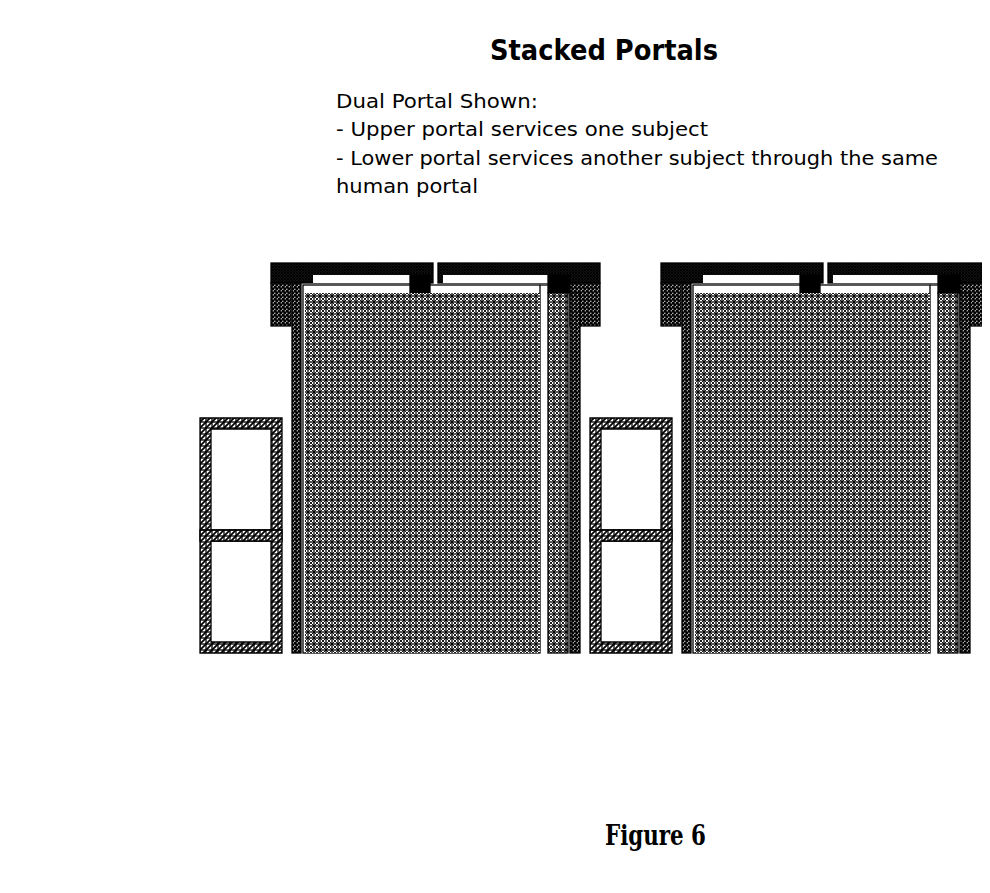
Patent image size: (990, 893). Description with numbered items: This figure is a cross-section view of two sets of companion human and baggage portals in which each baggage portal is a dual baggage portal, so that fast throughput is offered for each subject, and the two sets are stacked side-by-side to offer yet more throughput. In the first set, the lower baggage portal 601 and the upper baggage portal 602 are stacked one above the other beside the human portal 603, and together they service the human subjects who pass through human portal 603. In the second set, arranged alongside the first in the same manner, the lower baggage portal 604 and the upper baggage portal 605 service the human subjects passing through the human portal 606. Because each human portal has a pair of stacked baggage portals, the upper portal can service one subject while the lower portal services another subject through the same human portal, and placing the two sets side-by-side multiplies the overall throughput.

The baggage portal 601 is at (223, 615).
The baggage portal 602 is at (222, 502).
The human portal 603 is at (255, 252).
The baggage portal 604 is at (586, 649).
The baggage portal 605 is at (656, 598).
The human portal 606 is at (825, 514).